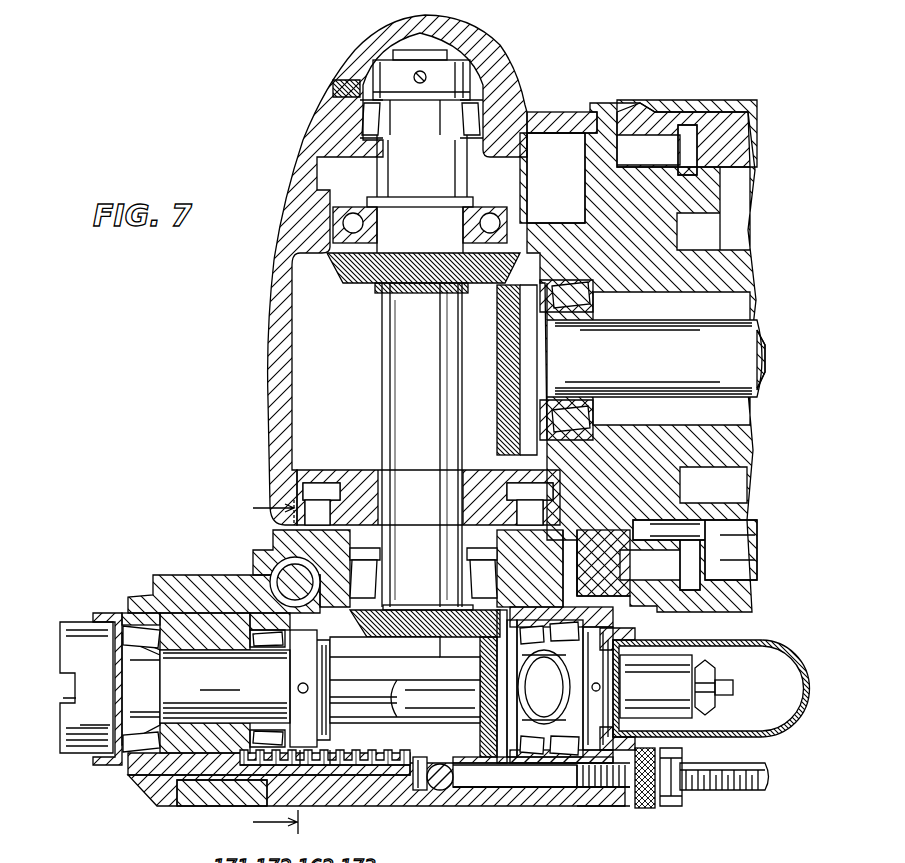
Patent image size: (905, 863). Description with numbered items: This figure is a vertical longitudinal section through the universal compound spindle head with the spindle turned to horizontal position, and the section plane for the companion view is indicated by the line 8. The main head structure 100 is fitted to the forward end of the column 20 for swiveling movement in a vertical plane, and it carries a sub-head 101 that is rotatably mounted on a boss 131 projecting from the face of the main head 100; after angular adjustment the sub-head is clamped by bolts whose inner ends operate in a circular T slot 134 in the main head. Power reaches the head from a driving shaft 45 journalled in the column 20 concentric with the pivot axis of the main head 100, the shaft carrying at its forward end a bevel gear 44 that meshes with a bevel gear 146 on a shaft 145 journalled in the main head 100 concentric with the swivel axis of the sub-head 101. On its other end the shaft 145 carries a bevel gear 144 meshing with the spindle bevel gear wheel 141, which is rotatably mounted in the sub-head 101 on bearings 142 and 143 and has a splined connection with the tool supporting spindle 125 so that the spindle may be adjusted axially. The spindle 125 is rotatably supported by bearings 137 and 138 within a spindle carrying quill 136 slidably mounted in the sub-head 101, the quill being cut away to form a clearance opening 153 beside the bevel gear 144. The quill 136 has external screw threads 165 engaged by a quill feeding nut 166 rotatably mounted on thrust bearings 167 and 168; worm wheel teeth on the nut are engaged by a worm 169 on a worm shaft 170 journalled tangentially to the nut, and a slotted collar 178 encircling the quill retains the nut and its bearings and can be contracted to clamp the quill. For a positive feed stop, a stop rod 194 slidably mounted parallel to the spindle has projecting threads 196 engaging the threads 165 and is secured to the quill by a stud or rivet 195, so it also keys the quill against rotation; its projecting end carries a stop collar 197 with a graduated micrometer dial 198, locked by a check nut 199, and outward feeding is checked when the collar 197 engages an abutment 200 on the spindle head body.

The section line 8 is at (265, 668).
The column 20 is at (733, 110).
The bevel gear 44 is at (505, 446).
The driving shaft 45 is at (752, 346).
The main head structure 100 is at (202, 324).
The sub-head 101 is at (161, 545).
The tool supporting spindle 125 is at (72, 628).
The boss 131 is at (430, 580).
The circular T slot 134 is at (322, 486).
The spindle carrying quill 136 is at (122, 613).
The bearing 137 is at (128, 638).
The bearing 138 is at (280, 648).
The spindle bevel gear wheel 141 is at (487, 760).
The bearing 142 is at (532, 758).
The bearing 143 is at (568, 758).
The bevel gear 144 is at (352, 606).
The shaft 145 is at (397, 421).
The bevel gear 146 is at (343, 288).
The clearance opening 153 is at (405, 680).
The external screw threads 165 is at (380, 760).
The quill feeding nut 166 is at (342, 766).
The thrust bearing 167 is at (335, 764).
The thrust bearing 168 is at (273, 783).
The worm 169 is at (275, 560).
The worm shaft 170 is at (277, 571).
The collar 178 is at (150, 783).
The stop rod 194 is at (485, 785).
The stud or rivet 195 is at (410, 786).
The projecting threads 196 is at (458, 764).
The stop collar 197 is at (645, 807).
The graduated micrometer dial 198 is at (638, 810).
The check nut 199 is at (688, 804).
The abutment 200 is at (603, 797).